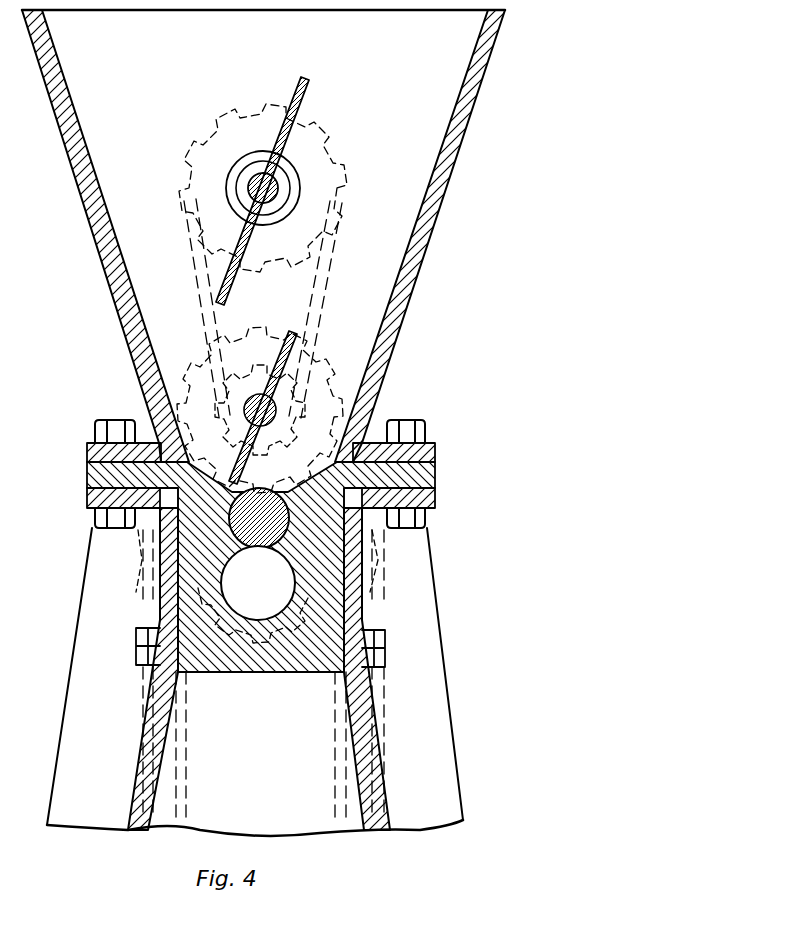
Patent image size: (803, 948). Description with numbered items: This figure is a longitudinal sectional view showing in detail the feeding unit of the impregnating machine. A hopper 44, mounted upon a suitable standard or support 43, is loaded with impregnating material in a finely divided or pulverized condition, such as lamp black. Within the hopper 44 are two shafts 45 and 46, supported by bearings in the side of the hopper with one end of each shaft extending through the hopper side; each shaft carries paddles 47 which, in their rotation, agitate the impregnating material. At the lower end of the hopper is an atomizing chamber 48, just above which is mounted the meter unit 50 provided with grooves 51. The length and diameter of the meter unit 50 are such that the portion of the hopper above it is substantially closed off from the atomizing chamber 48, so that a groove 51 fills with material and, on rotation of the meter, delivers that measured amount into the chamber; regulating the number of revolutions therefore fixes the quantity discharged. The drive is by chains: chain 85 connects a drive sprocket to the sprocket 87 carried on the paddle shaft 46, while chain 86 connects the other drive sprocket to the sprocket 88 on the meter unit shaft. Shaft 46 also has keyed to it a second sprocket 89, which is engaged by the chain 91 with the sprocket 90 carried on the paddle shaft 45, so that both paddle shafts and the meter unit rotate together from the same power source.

The standard 43 is at (463, 793).
The hopper 44 is at (422, 222).
The shaft 45 is at (277, 202).
The shaft 46 is at (267, 425).
The paddles 47 is at (238, 273).
The atomizing chamber 48 is at (257, 615).
The meter unit 50 is at (255, 546).
The grooves 51 is at (264, 548).
The chain 85 is at (335, 735).
The chain 86 is at (376, 615).
The sprocket 87 is at (325, 372).
The sprocket 88 is at (370, 560).
The second sprocket 89 is at (243, 383).
The sprocket 90 is at (315, 152).
The chain 91 is at (322, 308).